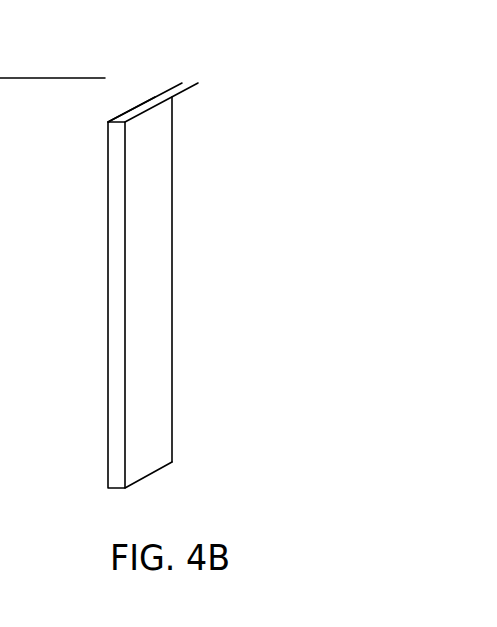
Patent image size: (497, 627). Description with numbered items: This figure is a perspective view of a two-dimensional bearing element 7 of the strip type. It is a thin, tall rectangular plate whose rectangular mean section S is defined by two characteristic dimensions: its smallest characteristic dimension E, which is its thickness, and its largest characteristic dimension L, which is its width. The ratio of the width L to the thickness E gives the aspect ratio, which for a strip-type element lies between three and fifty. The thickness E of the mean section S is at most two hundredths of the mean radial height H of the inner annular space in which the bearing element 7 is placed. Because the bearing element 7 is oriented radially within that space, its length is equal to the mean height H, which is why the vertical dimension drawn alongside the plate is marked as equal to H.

The two-dimensional bearing element 7 is at (100, 299).
The mean section S is at (142, 108).
The smallest characteristic dimension E is at (155, 83).
The mean radial height H is at (182, 97).
The largest characteristic dimension L is at (133, 488).